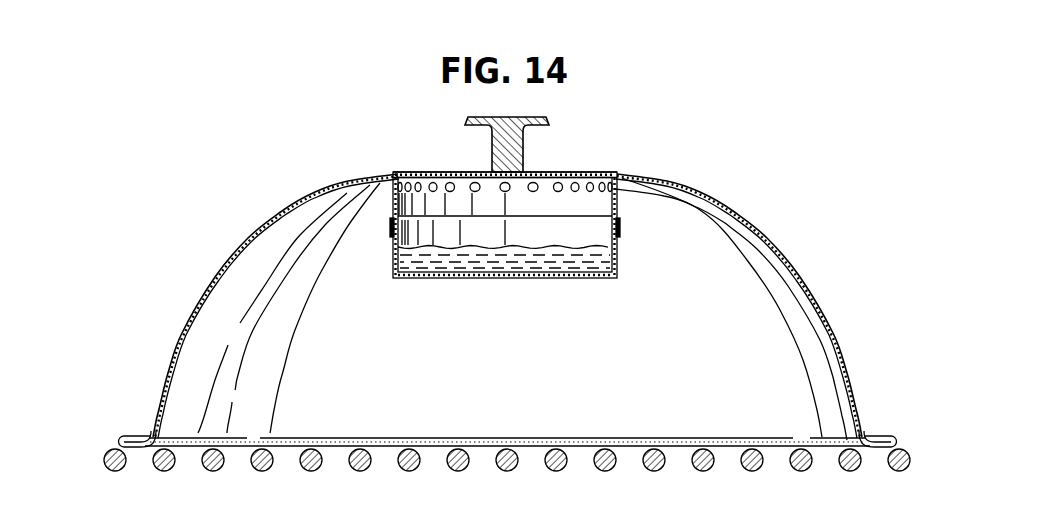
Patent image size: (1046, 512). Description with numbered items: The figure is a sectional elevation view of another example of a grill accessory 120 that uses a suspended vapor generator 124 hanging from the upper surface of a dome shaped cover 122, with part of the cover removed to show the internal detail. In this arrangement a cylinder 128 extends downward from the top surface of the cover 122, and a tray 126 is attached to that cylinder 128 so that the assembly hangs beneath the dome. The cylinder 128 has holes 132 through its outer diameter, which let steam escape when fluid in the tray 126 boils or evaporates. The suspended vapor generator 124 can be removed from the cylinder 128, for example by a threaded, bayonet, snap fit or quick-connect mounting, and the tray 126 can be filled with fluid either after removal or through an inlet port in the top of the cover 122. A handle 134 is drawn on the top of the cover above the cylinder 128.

The grill accessory 120 is at (737, 193).
The dome shaped cover 122 is at (800, 287).
The suspended vapor generator 124 is at (389, 232).
The tray 126 is at (616, 264).
The cylinder 128 is at (617, 202).
The holes 132 is at (432, 183).
The handle 134 is at (569, 171).